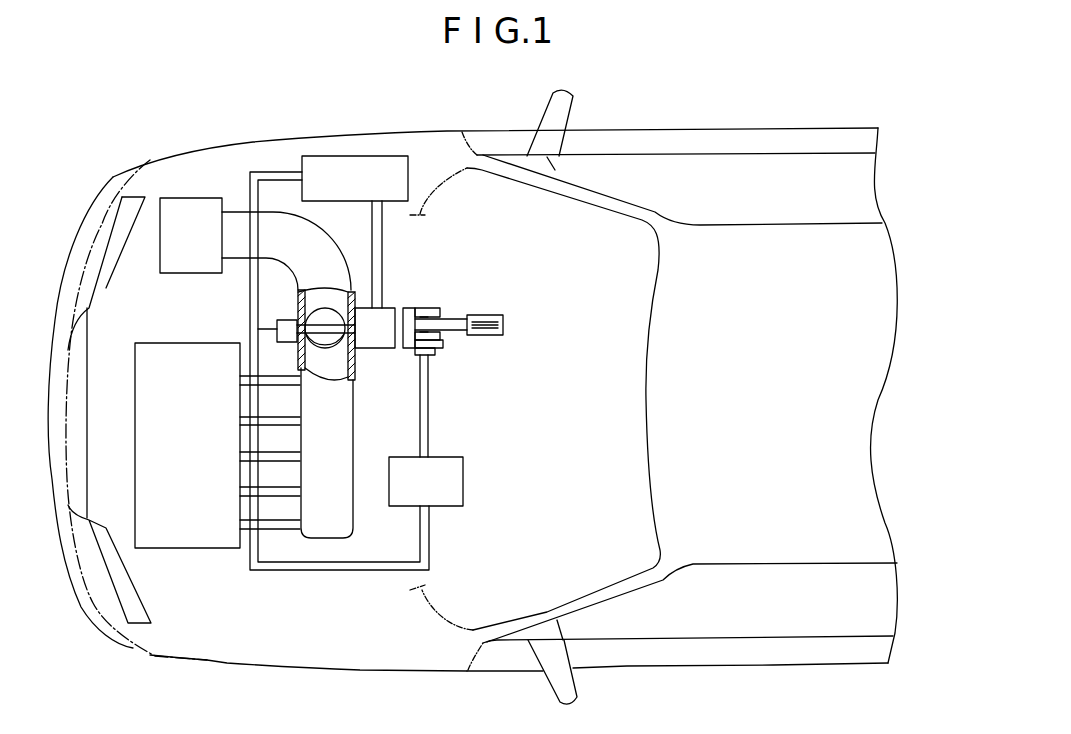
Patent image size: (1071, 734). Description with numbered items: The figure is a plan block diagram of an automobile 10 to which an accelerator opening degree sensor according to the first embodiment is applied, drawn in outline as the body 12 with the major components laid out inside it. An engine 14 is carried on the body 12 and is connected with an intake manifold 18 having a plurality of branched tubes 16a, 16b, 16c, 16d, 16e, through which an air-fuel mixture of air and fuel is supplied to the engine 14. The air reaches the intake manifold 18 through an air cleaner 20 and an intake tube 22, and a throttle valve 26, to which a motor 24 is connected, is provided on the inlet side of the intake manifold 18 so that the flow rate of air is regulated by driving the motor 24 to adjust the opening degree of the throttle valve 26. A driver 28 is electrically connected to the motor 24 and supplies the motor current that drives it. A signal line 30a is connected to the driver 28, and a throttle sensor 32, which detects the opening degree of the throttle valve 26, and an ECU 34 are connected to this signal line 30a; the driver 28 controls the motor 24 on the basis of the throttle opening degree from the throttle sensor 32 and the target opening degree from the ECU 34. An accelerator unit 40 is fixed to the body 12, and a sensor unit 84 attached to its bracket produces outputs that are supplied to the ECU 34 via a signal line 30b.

The automobile 10 is at (688, 75).
The body 12 is at (715, 128).
The engine 14 is at (157, 343).
The branched tube 16a is at (272, 376).
The branched tube 16b is at (272, 417).
The branched tube 16c is at (272, 452).
The branched tube 16d is at (272, 487).
The branched tube 16e is at (272, 520).
The intake manifold 18 is at (347, 425).
The air cleaner 20 is at (193, 189).
The intake tube 22 is at (237, 263).
The motor 24 is at (388, 308).
The throttle valve 26 is at (330, 350).
The driver 28 is at (355, 156).
The signal line 30a is at (273, 172).
The signal line 30b is at (430, 425).
The throttle sensor 32 is at (281, 320).
The ECU 34 is at (463, 468).
The accelerator unit 40 is at (443, 297).
The sensor unit 84 is at (445, 356).